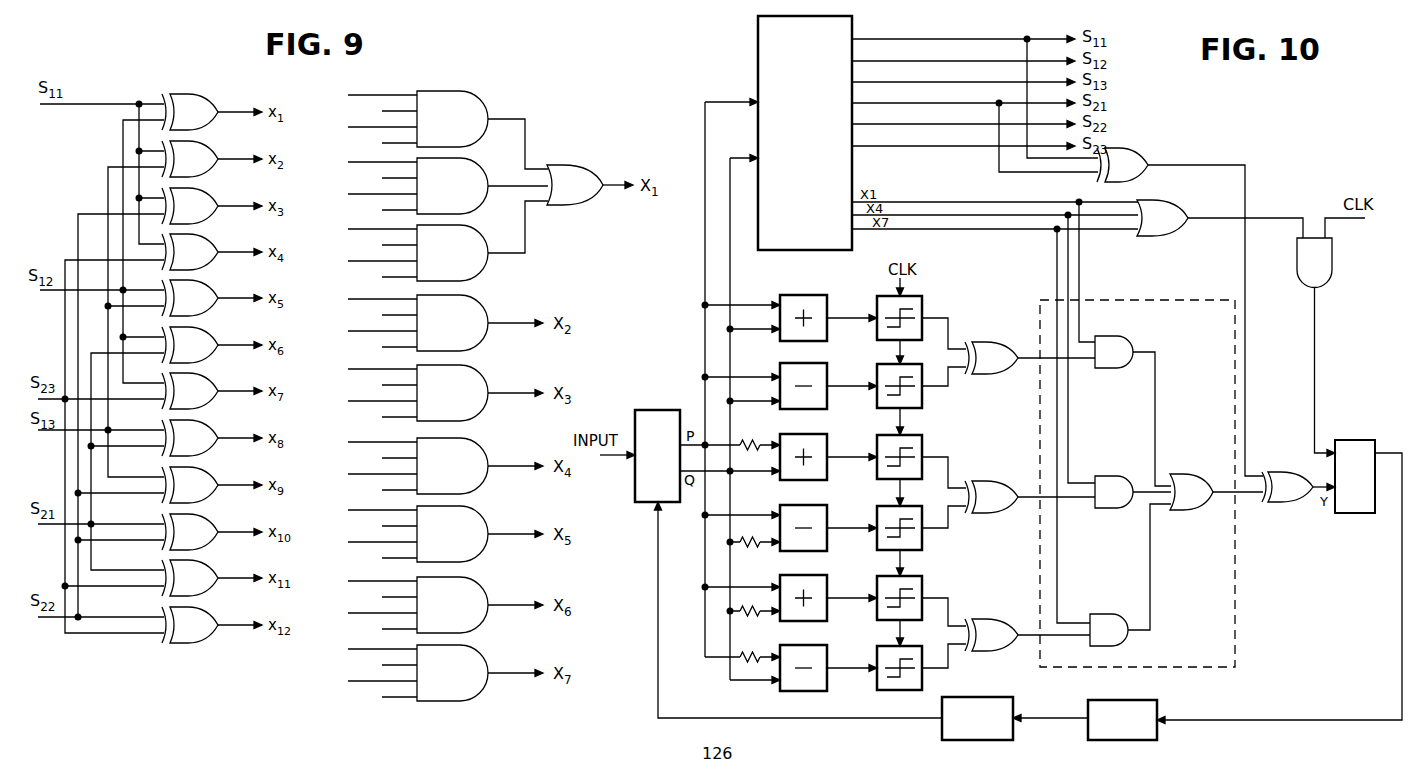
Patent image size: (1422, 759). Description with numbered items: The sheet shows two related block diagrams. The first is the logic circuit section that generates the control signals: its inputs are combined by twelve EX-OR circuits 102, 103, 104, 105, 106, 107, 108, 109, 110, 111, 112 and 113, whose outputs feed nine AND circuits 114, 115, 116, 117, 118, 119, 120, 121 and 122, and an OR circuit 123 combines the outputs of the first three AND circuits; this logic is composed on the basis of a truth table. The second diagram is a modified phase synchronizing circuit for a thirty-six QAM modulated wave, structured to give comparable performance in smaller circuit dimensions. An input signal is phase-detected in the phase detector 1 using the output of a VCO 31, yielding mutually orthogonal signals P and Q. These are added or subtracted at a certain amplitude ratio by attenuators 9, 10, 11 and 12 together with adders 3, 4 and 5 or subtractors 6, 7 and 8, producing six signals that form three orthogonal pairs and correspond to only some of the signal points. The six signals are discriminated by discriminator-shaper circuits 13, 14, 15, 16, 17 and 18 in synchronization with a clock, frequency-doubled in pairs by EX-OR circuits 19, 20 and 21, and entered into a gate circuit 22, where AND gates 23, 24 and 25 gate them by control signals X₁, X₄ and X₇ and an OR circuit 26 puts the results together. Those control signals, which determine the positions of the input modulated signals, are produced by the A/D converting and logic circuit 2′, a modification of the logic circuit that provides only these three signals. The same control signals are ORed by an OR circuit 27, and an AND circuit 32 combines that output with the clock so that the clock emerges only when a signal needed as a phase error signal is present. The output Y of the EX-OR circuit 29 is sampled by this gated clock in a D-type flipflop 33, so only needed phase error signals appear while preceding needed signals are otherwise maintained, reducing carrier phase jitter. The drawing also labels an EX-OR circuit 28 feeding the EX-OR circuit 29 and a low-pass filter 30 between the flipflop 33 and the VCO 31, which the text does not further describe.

In FIG. 10, the phase detector 1 is at (660, 410).
In FIG. 10, the A/D converting and logic circuit 2′ is at (759, 46).
In FIG. 10, the adder 3 is at (801, 294).
In FIG. 10, the adder 4 is at (802, 434).
In FIG. 10, the adder 5 is at (809, 575).
In FIG. 10, the subtractor 6 is at (811, 363).
In FIG. 10, the subtractor 7 is at (812, 505).
In FIG. 10, the subtractor 8 is at (809, 645).
In FIG. 10, the attenuator 9 is at (750, 442).
In FIG. 10, the attenuator 10 is at (755, 549).
In FIG. 10, the attenuator 11 is at (752, 614).
In FIG. 10, the attenuator 12 is at (748, 670).
In FIG. 10, the discriminator-shaper circuit 13 is at (922, 301).
In FIG. 10, the discriminator-shaper circuit 14 is at (922, 369).
In FIG. 10, the discriminator-shaper circuit 15 is at (922, 440).
In FIG. 10, the discriminator-shaper circuit 16 is at (922, 511).
In FIG. 10, the discriminator-shaper circuit 17 is at (922, 581).
In FIG. 10, the discriminator-shaper circuit 18 is at (922, 651).
In FIG. 10, the EX-OR circuit 19 is at (994, 340).
In FIG. 10, the EX-OR circuit 20 is at (994, 480).
In FIG. 10, the EX-OR circuit 21 is at (988, 616).
In FIG. 10, the gate circuit 22 is at (1140, 300).
In FIG. 10, the AND gate 23 is at (1124, 336).
In FIG. 10, the AND gate 24 is at (1109, 477).
In FIG. 10, the AND gate 25 is at (1105, 613).
In FIG. 10, the OR circuit 26 is at (1190, 478).
In FIG. 10, the OR circuit 27 is at (1188, 210).
In FIG. 10, the exclusive-OR gate 28 is at (1150, 152).
In FIG. 10, the EX-OR circuit 29 is at (1285, 469).
In FIG. 10, the low-pass filter 30 is at (1159, 700).
In FIG. 10, the VCO 31 is at (1014, 697).
In FIG. 10, the AND circuit 32 is at (1334, 263).
In FIG. 10, the D-type flipflop 33 is at (1350, 514).
In FIG. 9, the EX-OR circuit 102 is at (210, 110).
In FIG. 9, the EX-OR circuit 103 is at (210, 157).
In FIG. 9, the EX-OR circuit 104 is at (210, 204).
In FIG. 9, the EX-OR circuit 105 is at (210, 250).
In FIG. 9, the EX-OR circuit 106 is at (210, 296).
In FIG. 9, the EX-OR circuit 107 is at (210, 343).
In FIG. 9, the EX-OR circuit 108 is at (210, 389).
In FIG. 9, the EX-OR circuit 109 is at (210, 436).
In FIG. 9, the EX-OR circuit 110 is at (210, 483).
In FIG. 9, the EX-OR circuit 111 is at (210, 530).
In FIG. 9, the EX-OR circuit 112 is at (210, 576).
In FIG. 9, the EX-OR circuit 113 is at (210, 623).
In FIG. 9, the AND circuit 114 is at (486, 105).
In FIG. 9, the AND circuit 115 is at (486, 172).
In FIG. 9, the AND circuit 116 is at (486, 239).
In FIG. 9, the AND circuit 117 is at (486, 309).
In FIG. 9, the AND circuit 118 is at (486, 379).
In FIG. 9, the AND circuit 119 is at (486, 452).
In FIG. 9, the AND circuit 120 is at (486, 520).
In FIG. 9, the AND circuit 121 is at (486, 591).
In FIG. 9, the AND circuit 122 is at (486, 659).
In FIG. 9, the OR circuit 123 is at (575, 197).